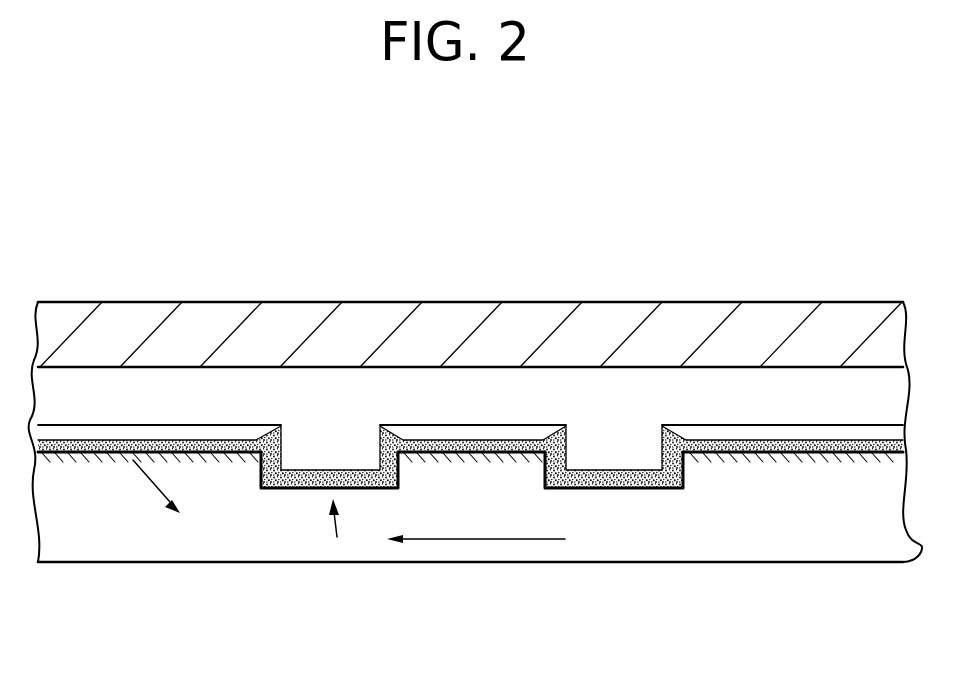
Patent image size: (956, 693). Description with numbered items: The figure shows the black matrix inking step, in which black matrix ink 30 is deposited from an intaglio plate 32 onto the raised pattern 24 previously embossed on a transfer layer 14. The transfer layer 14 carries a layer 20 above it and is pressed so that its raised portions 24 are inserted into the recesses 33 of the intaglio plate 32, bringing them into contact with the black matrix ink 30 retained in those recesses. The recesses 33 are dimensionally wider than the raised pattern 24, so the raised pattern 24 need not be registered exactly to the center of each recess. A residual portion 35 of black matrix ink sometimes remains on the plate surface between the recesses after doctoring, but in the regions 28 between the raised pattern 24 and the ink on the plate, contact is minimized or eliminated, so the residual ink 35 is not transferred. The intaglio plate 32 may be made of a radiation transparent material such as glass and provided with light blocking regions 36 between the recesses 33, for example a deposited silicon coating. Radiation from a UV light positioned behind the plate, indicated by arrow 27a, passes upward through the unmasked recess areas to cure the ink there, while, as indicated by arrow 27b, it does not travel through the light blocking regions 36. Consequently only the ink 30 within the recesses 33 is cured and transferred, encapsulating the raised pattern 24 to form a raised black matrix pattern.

The transfer layer 14 is at (688, 390).
The hatched top layer 20 is at (360, 320).
The raised pattern 24 is at (587, 450).
The arrow indicating UV radiation 27a is at (337, 537).
The arrow indicating blocked radiation 27b is at (132, 453).
The regions between raised pattern and black matrix ink 28 is at (860, 423).
The black matrix ink 30 is at (673, 490).
The intaglio plate 32 is at (806, 508).
The recesses 33 is at (263, 490).
The residual portion of black matrix ink 35 is at (78, 453).
The light blocking regions 36 is at (722, 453).